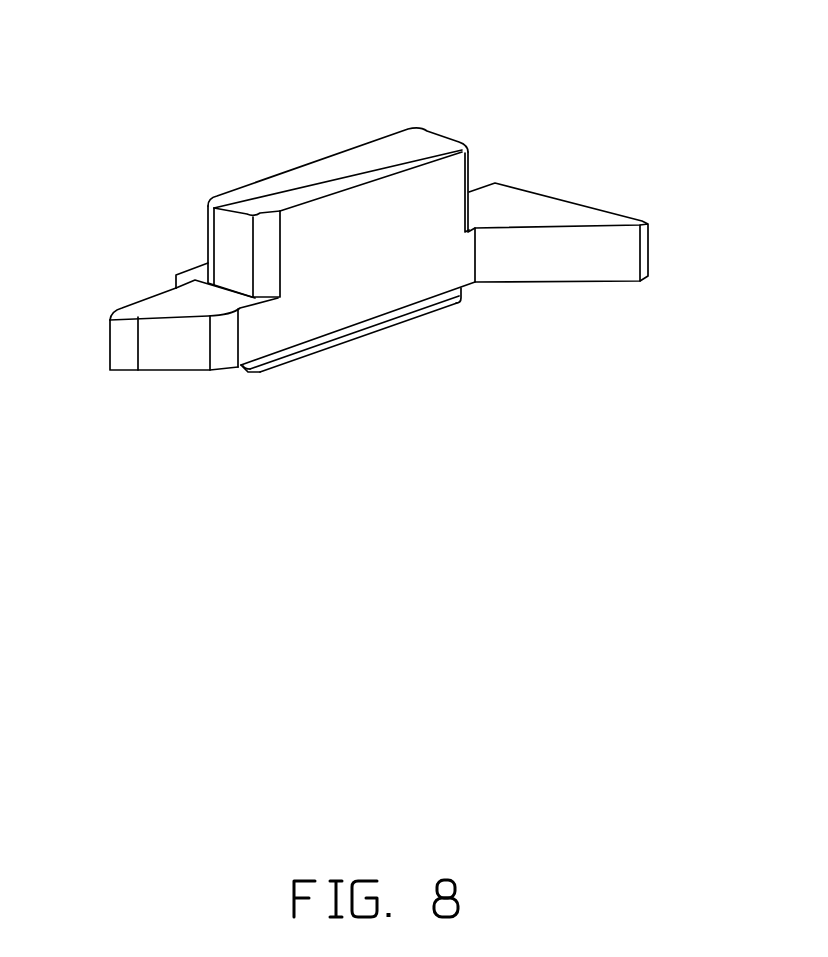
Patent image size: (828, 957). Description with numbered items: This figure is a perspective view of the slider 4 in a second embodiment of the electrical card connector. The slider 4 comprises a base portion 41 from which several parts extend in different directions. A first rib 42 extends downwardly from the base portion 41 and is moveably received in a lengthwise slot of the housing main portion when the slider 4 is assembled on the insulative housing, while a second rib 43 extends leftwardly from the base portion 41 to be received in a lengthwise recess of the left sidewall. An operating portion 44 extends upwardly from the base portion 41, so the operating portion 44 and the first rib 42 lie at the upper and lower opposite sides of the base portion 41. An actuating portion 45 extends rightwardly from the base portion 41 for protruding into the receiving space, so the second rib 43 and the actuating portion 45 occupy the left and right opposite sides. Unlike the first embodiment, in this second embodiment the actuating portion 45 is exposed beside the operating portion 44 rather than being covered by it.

The slider 4 is at (272, 125).
The base portion 41 is at (373, 295).
The first rib 42 is at (298, 350).
The second rib 43 is at (191, 272).
The operating portion 44 is at (375, 157).
The actuating portion 45 is at (567, 255).